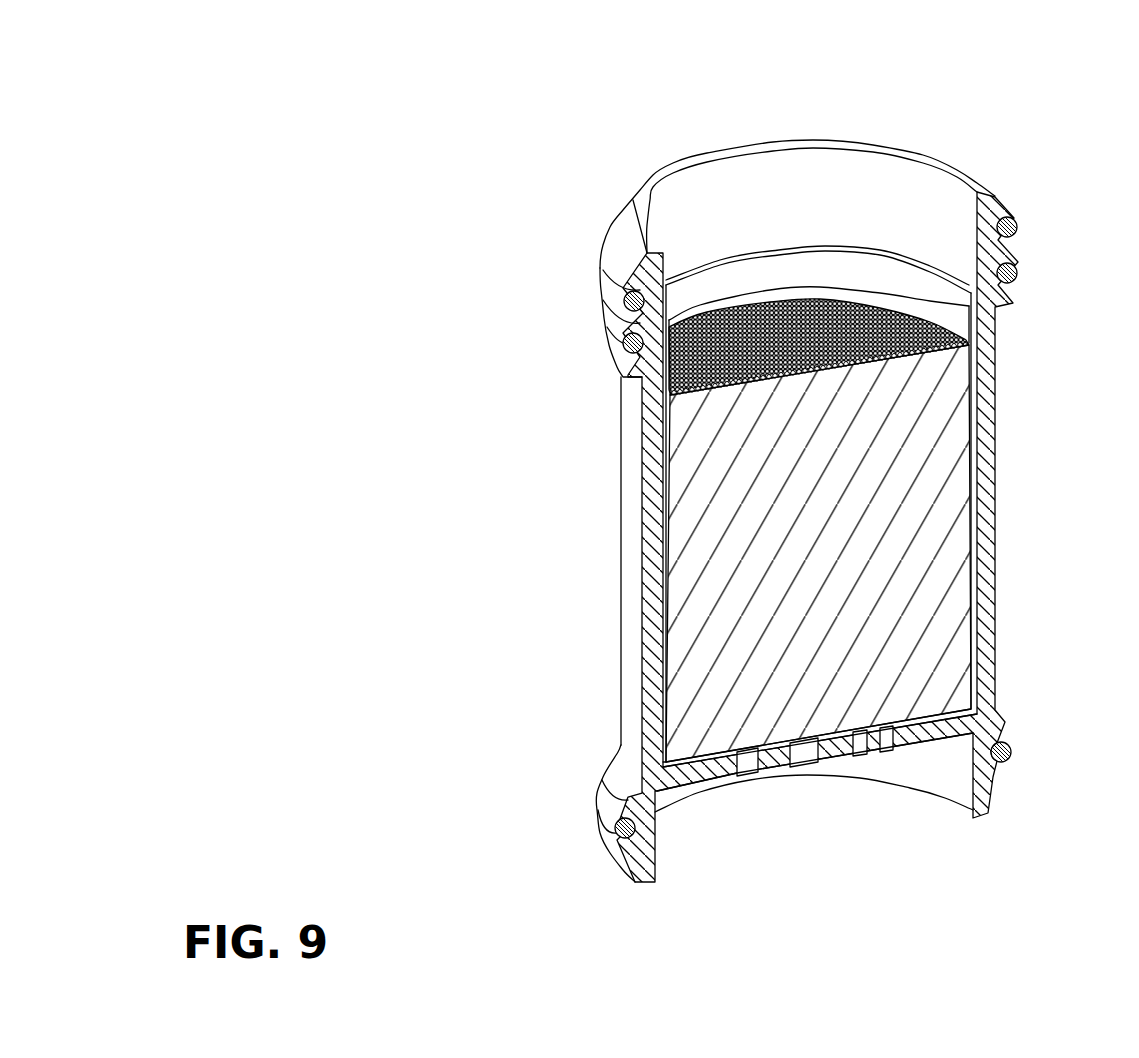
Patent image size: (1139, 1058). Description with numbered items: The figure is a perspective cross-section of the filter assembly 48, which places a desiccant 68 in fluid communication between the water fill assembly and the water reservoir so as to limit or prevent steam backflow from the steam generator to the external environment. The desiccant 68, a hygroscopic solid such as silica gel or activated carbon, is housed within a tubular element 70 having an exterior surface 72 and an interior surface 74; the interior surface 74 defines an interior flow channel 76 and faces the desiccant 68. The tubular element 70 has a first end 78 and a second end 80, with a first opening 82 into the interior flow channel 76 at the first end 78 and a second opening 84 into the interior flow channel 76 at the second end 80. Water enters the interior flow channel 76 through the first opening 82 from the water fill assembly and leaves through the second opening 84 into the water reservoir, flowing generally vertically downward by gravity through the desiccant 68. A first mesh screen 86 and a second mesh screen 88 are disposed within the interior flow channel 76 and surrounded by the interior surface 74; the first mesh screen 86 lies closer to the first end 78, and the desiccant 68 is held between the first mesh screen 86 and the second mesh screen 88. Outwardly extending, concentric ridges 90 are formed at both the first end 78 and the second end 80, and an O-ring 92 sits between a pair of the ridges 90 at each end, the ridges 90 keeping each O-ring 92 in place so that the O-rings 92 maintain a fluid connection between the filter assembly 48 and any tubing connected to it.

The filter assembly 48 is at (545, 139).
The desiccant 68 is at (690, 584).
The tubular element 70 is at (996, 385).
The exterior surface 72 is at (634, 463).
The interior surface 74 is at (753, 205).
The interior flow channel 76 is at (793, 517).
The first end 78 is at (895, 150).
The second end 80 is at (906, 790).
The first opening 82 is at (652, 178).
The second opening 84 is at (817, 777).
The first mesh screen 86 is at (916, 303).
The second mesh screen 88 is at (928, 738).
The ridges 90 is at (627, 259).
The O-ring 92 is at (1018, 268).